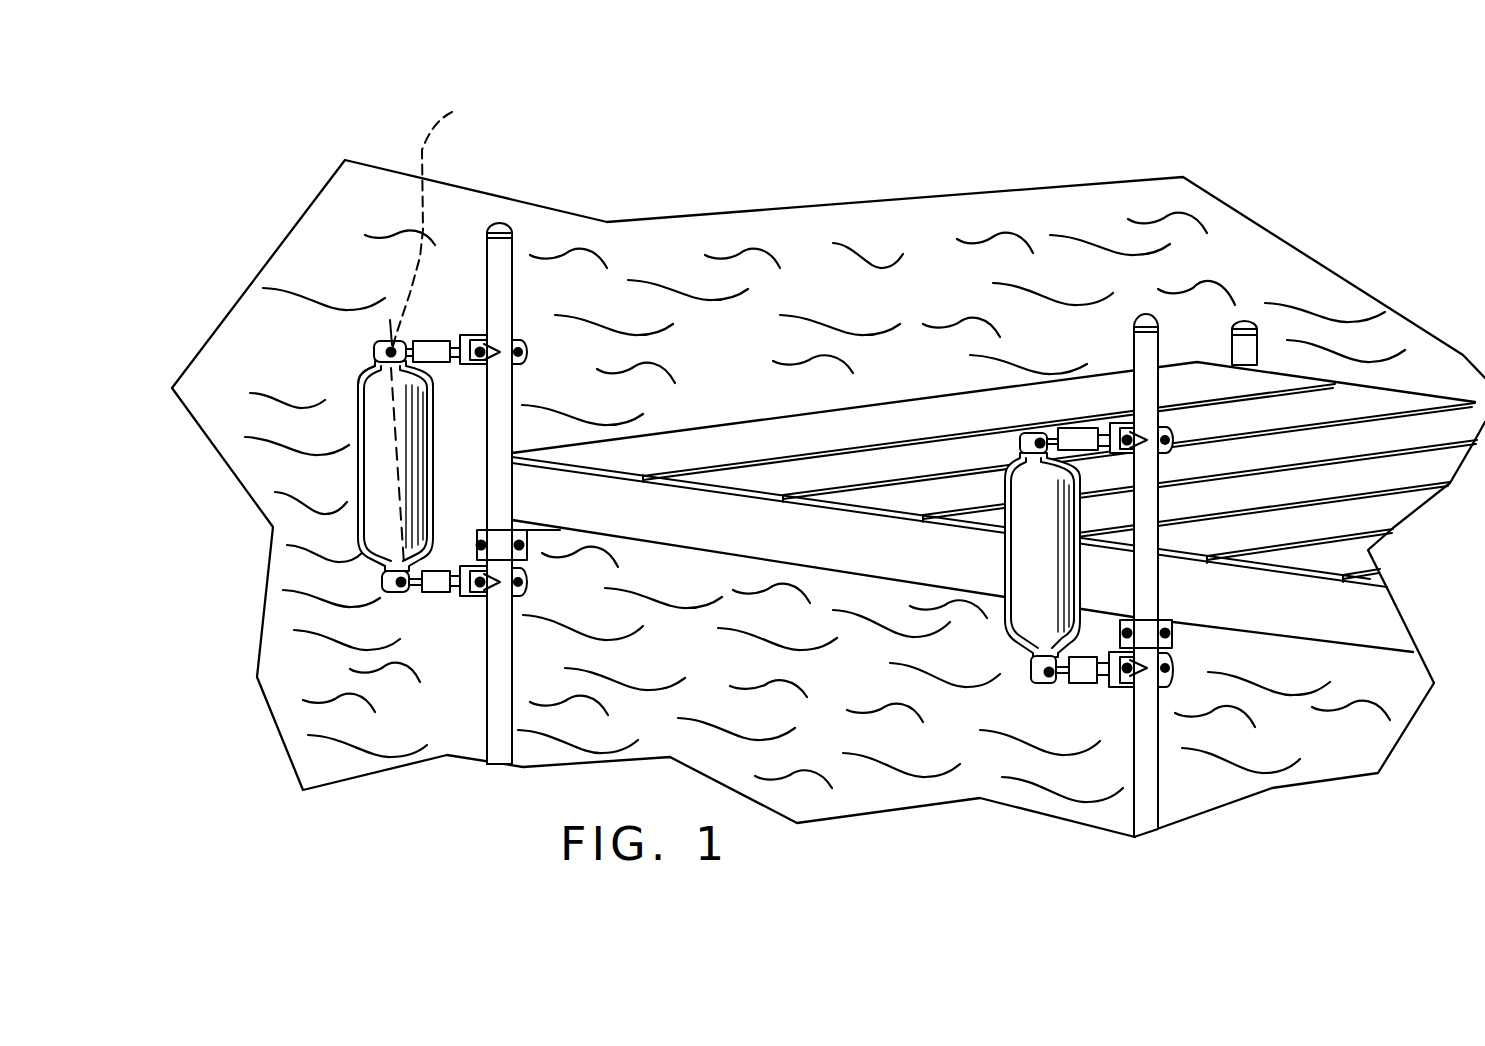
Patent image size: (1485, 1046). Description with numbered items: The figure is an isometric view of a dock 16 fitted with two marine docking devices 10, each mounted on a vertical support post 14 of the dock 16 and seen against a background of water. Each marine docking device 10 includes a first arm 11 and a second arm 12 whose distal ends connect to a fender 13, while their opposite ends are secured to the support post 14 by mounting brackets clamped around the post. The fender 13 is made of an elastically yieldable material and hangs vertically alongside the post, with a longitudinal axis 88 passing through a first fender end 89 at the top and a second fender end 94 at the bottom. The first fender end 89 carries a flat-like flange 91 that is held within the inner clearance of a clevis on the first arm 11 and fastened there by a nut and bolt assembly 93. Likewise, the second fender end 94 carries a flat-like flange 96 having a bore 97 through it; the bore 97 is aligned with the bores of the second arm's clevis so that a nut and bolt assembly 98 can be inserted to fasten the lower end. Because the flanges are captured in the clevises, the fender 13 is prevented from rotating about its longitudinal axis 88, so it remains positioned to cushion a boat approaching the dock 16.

The marine docking device 10 is at (277, 464).
The first arm 11 is at (434, 331).
The second arm 12 is at (451, 618).
The fender 13 is at (377, 525).
The support post 14 is at (497, 295).
The dock 16 is at (817, 427).
The longitudinal axis 88 is at (441, 223).
The first fender end 89 is at (373, 370).
The flange 91 is at (373, 347).
The nut and bolt assembly 93 is at (404, 364).
The second fender end 94 is at (383, 583).
The flange 96 is at (400, 592).
The bore 97 is at (407, 595).
The nut and bolt assembly 98 is at (403, 626).